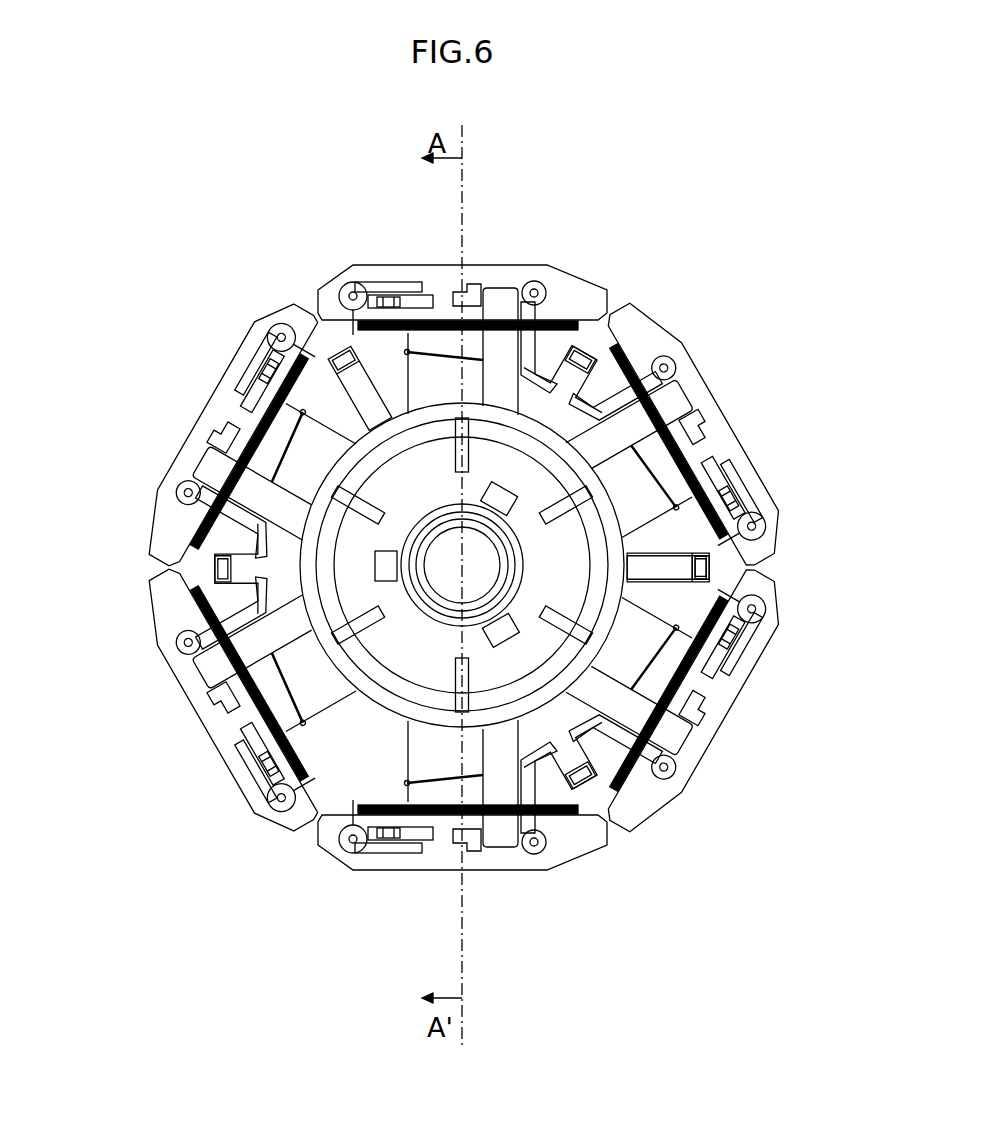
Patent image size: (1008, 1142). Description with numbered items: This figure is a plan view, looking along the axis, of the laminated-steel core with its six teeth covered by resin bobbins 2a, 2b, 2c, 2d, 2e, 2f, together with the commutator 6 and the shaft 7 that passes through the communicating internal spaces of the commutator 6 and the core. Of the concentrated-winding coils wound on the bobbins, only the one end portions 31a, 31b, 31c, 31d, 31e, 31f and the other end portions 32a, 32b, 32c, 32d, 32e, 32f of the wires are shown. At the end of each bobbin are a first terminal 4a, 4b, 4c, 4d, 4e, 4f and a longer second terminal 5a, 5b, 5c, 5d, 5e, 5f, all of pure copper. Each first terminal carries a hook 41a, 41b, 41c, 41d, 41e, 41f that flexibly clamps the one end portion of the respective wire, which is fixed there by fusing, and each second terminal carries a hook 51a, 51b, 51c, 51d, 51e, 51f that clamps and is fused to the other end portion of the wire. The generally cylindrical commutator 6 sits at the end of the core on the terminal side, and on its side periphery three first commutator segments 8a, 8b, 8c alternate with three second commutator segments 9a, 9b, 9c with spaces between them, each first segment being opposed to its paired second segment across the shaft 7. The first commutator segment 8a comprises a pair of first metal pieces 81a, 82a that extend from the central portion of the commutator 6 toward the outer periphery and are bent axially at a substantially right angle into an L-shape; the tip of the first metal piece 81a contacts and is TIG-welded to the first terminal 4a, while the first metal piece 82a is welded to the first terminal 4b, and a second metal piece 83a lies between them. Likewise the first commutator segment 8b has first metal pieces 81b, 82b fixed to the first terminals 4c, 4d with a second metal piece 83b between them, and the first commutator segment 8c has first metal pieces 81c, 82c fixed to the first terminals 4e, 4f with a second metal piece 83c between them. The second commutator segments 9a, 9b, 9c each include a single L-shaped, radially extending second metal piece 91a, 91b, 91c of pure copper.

The bobbin 2a is at (200, 728).
The bobbin 2b is at (215, 408).
The bobbin 2c is at (515, 264).
The bobbin 2d is at (755, 458).
The bobbin 2e is at (735, 738).
The bobbin 2f is at (432, 860).
The first terminal 4a is at (232, 747).
The first terminal 4b is at (232, 443).
The first terminal 4c is at (512, 316).
The first terminal 4d is at (700, 430).
The first terminal 4e is at (690, 758).
The first terminal 4f is at (468, 860).
The second terminal 5a is at (265, 802).
The second terminal 5b is at (245, 373).
The second terminal 5c is at (385, 282).
The second terminal 5d is at (735, 498).
The second terminal 5e is at (725, 693).
The second terminal 5f is at (380, 853).
The hook 51a is at (258, 764).
The hook 51b is at (262, 353).
The hook 51c is at (398, 296).
The hook 51d is at (748, 520).
The hook 51e is at (740, 643).
The hook 51f is at (394, 843).
The hook 41a is at (200, 674).
The hook 41b is at (200, 487).
The hook 41c is at (476, 290).
The hook 41d is at (690, 400).
The hook 41e is at (690, 728).
The hook 41f is at (475, 850).
The end portion of the wire 31a is at (187, 642).
The end portion of the wire 31b is at (185, 494).
The end portion of the wire 31c is at (545, 290).
The end portion of the wire 31d is at (672, 371).
The end portion of the wire 31e is at (668, 770).
The end portion of the wire 31f is at (540, 845).
The other end portion of the wire 32a is at (283, 805).
The other end portion of the wire 32b is at (283, 325).
The other end portion of the wire 32c is at (351, 289).
The other end portion of the wire 32d is at (760, 527).
The other end portion of the wire 32e is at (760, 610).
The other end portion of the wire 32f is at (352, 848).
The first metal piece 81a is at (215, 702).
The first metal piece 81b is at (537, 318).
The first metal piece 81c is at (650, 780).
The first metal piece 82a is at (205, 462).
The first metal piece 82b is at (700, 398).
The first metal piece 82c is at (500, 845).
The second metal piece 83a is at (190, 551).
The second metal piece 83b is at (606, 330).
The second metal piece 83c is at (618, 838).
The second metal piece 91a is at (710, 570).
The second metal piece 91b is at (343, 775).
The second metal piece 91c is at (335, 358).
The commutator 6 is at (770, 735).
The shaft 7 is at (507, 553).
The first commutator segment 8a is at (323, 553).
The first commutator segment 8b is at (503, 437).
The first commutator segment 8c is at (520, 700).
The second commutator segment 9a is at (597, 580).
The second commutator segment 9b is at (412, 700).
The second commutator segment 9c is at (406, 440).